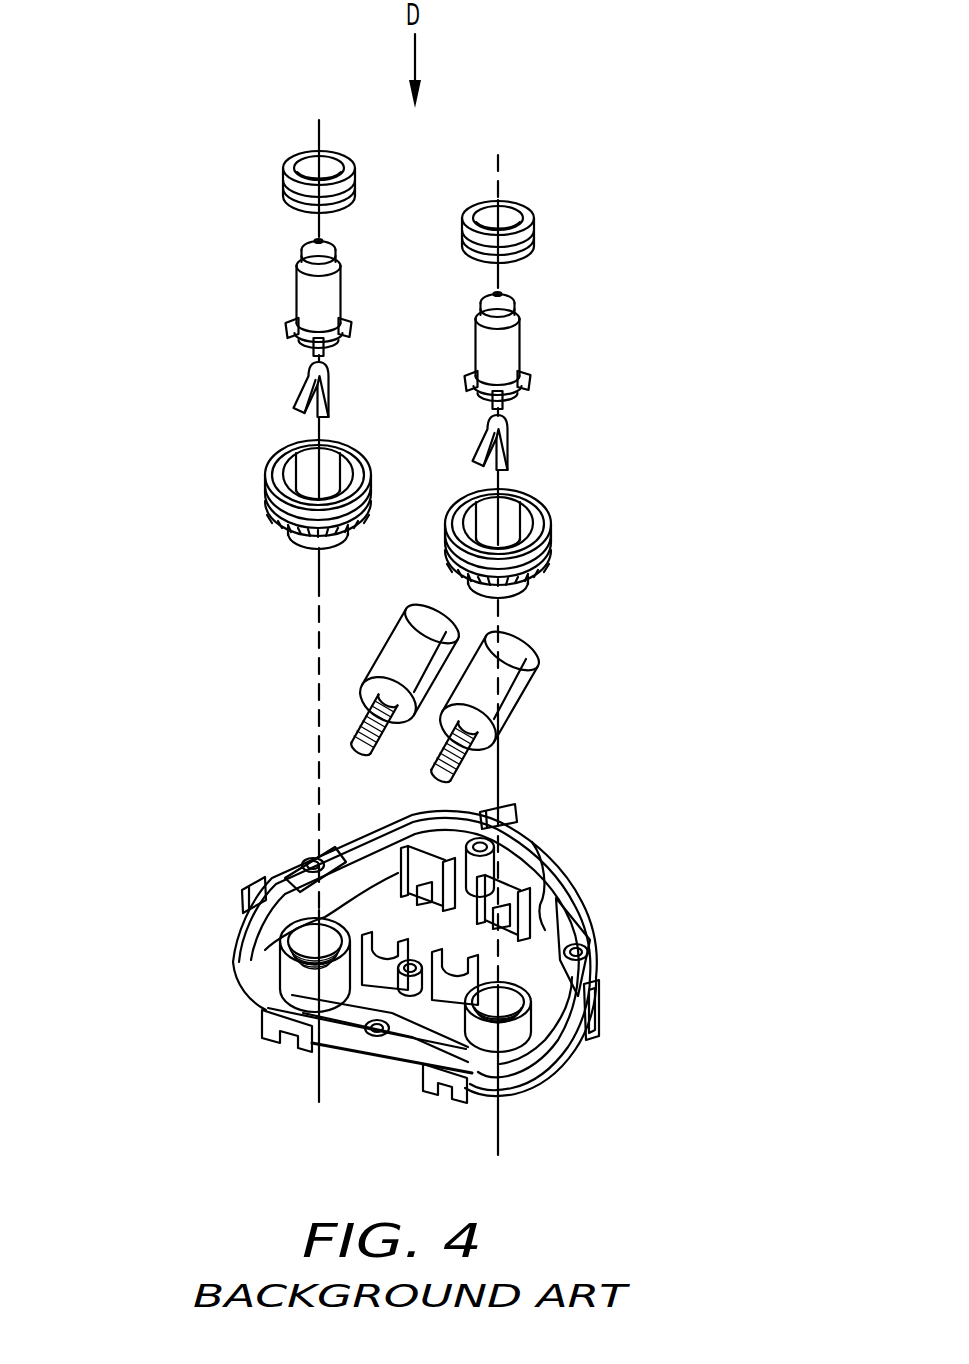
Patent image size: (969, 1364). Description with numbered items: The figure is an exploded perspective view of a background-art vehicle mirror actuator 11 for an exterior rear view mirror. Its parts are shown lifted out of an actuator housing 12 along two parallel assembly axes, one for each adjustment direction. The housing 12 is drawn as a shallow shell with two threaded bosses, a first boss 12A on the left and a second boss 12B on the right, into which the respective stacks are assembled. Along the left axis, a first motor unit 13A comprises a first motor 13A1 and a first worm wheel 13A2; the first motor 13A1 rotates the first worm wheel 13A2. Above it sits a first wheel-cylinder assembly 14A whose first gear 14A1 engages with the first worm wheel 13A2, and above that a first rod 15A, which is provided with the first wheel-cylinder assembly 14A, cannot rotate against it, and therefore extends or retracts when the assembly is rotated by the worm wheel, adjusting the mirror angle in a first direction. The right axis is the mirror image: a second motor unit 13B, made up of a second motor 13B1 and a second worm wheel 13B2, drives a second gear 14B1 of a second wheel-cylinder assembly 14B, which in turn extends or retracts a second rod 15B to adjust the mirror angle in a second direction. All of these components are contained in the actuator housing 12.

The vehicle mirror actuator 11 is at (566, 166).
The actuator housing 12 is at (577, 906).
The first threaded boss of housing 12A is at (290, 950).
The second threaded boss of housing 12B is at (566, 1042).
The first motor unit 13A is at (207, 640).
The first motor 13A1 is at (365, 661).
The first worm wheel 13A2 is at (357, 723).
The second motor unit 13B is at (638, 677).
The second motor 13B1 is at (524, 698).
The second worm wheel 13B2 is at (464, 763).
The first wheel-cylinder assembly 14A is at (266, 487).
The first gear 14A1 is at (272, 517).
The second wheel-cylinder assembly 14B is at (551, 526).
The second gear 14B1 is at (549, 561).
The first rod 15A is at (298, 281).
The second rod 15B is at (521, 338).